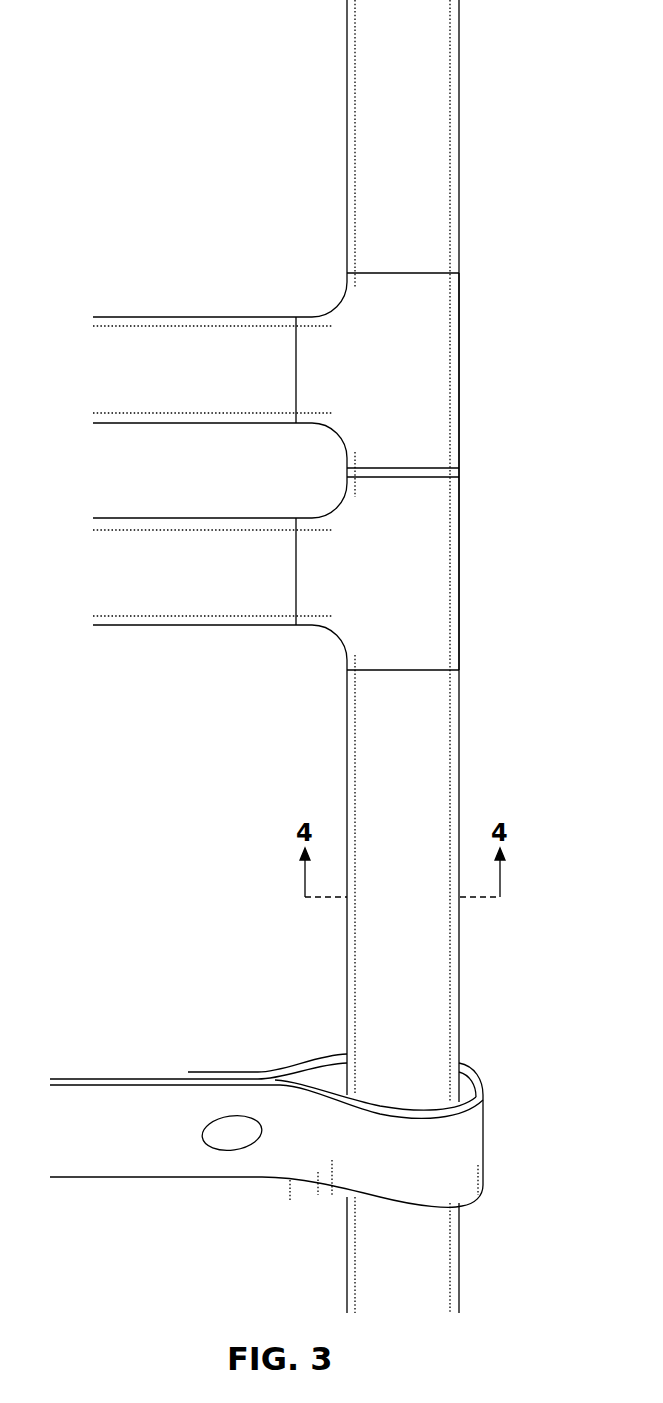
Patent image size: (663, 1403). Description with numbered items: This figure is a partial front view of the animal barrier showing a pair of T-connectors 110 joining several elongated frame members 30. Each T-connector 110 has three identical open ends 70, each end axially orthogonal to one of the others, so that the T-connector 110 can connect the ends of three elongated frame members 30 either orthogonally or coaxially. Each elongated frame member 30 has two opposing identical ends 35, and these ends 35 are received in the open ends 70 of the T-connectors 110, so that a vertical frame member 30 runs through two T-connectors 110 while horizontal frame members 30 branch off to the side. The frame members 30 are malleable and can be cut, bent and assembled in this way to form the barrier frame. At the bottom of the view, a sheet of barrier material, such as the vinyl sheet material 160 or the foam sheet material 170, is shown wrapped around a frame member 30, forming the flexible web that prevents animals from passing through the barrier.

The elongated frame member 30 is at (371, 120).
The end of elongated frame member 35 is at (371, 263).
The open end of connector 70 is at (396, 271).
The T-connector 110 is at (437, 375).
The vinyl sheet material 160 is at (266, 1119).
The foam sheet material 170 is at (118, 1100).